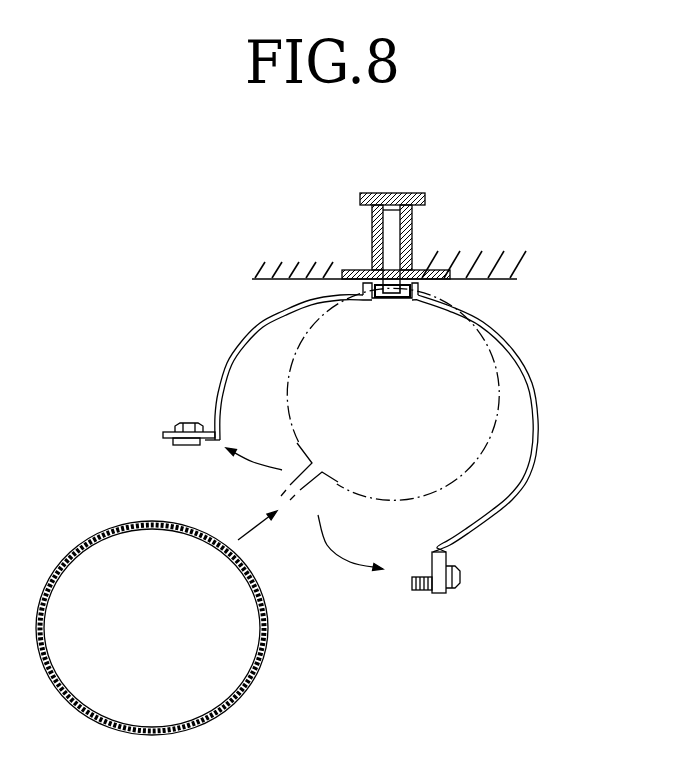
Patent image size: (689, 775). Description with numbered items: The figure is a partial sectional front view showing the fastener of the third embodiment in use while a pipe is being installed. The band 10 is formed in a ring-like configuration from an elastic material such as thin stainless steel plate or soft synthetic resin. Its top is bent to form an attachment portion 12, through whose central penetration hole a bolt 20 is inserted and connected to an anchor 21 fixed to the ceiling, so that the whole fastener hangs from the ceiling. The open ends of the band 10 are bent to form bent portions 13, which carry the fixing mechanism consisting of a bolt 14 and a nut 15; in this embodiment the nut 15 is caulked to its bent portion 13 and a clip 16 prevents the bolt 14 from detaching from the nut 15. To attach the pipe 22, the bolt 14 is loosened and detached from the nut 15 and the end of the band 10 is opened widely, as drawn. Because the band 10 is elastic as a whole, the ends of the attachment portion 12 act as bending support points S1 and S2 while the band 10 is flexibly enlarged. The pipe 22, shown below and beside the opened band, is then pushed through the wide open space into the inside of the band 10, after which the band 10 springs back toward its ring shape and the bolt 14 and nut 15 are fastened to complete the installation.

The band 10 is at (247, 342).
The attachment portion 12 is at (418, 290).
The bent portion 13 is at (165, 437).
The bolt 14 is at (460, 574).
The nut 15 is at (182, 424).
The clip 16 is at (441, 590).
The bolt 20 is at (412, 247).
The anchor 21 is at (425, 200).
The pipe 22 is at (257, 668).
The bending support point S1 is at (366, 303).
The bending support point S2 is at (416, 303).